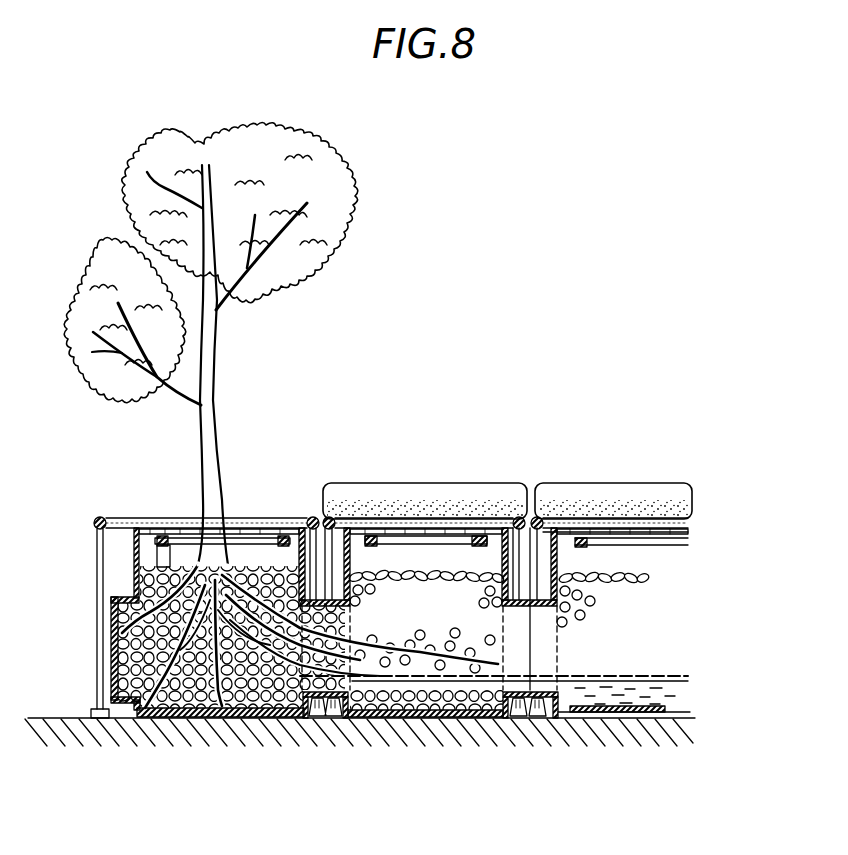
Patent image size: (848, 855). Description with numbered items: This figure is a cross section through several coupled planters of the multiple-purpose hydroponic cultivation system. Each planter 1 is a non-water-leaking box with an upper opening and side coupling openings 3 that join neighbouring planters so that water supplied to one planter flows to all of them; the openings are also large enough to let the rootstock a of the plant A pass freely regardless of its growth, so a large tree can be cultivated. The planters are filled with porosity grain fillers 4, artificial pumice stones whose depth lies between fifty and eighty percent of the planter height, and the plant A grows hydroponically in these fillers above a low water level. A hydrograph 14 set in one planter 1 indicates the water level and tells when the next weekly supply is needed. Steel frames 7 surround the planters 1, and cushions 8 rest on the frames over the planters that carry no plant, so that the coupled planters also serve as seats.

The hydroponically cultivated plant A is at (118, 193).
The planter 1 is at (128, 556).
The hydrograph 14 is at (176, 548).
The porosity grain fillers 4 is at (262, 566).
The steel frames 7 is at (97, 581).
The cushions 8 is at (385, 500).
The rootstock a is at (303, 633).
The coupling openings 3 is at (537, 637).